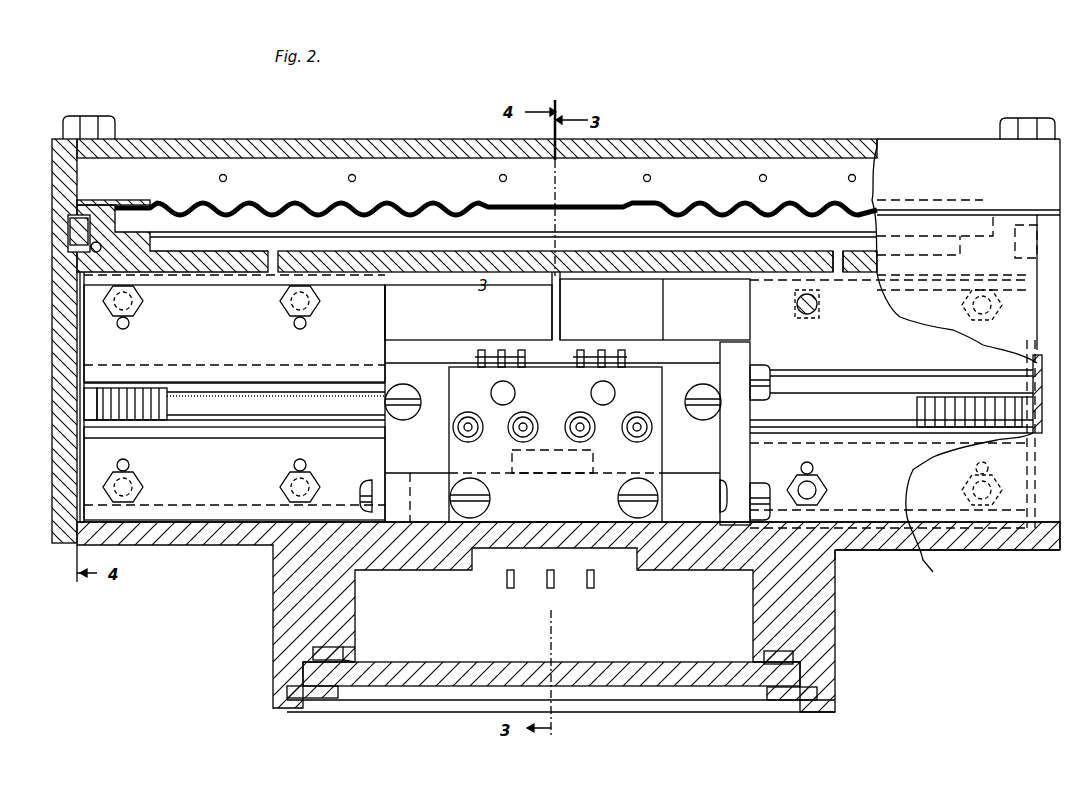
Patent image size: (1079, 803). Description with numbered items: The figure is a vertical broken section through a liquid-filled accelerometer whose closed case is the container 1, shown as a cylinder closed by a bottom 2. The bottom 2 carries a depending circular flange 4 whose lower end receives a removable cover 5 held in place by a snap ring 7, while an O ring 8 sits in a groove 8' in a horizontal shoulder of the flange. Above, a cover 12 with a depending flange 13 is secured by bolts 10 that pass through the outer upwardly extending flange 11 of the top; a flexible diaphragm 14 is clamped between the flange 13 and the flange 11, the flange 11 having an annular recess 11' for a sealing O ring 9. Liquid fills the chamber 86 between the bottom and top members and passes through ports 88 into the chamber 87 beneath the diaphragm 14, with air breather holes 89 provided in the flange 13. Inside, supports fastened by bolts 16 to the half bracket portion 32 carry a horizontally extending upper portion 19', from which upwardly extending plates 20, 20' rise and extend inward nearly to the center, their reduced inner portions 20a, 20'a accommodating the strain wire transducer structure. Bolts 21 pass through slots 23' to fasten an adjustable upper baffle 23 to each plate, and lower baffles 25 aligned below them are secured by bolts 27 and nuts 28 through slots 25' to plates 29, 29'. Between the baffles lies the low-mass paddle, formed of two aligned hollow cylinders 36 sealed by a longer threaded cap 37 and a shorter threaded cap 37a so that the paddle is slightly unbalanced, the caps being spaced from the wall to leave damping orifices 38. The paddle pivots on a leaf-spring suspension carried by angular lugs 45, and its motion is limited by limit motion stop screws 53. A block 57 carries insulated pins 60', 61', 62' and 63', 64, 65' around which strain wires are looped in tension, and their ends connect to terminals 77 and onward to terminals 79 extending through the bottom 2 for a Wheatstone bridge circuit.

The container 1 is at (77, 307).
The bottom 2 is at (176, 545).
The depending circular flange 4 is at (273, 605).
The removable cover 5 is at (378, 686).
The snap ring 7 is at (312, 698).
The O ring 8 is at (524, 671).
The groove 8' is at (362, 636).
The O ring 9 is at (68, 237).
The bolts 10 is at (115, 127).
The outer upwardly extending flange 11 is at (113, 192).
The annular recess 11' is at (54, 256).
The cover 12 is at (384, 140).
The depending flange 13 is at (52, 172).
The flexible diaphragm 14 is at (154, 200).
The bolts 16 is at (772, 366).
The horizontally extending upper portion 19' is at (759, 428).
The upwardly extending plate 20 is at (442, 268).
The upwardly extending plate 20' is at (963, 370).
The inner portion 20a is at (468, 306).
The inner portion 20'a is at (655, 306).
The bolts 21 is at (143, 301).
The baffle 23 is at (520, 404).
The slots 23' is at (457, 322).
The lower baffles 25 is at (558, 481).
The slots 25' is at (552, 463).
The bolts 27 is at (143, 483).
The nuts 28 is at (140, 497).
The plate 29 is at (197, 473).
The plate 29' is at (860, 567).
The half bracket portion 32 is at (552, 442).
The hollow cylinders 36 is at (257, 384).
The threaded cap 37 is at (1007, 427).
The threaded cap 37a is at (97, 399).
The orifices 38 is at (84, 416).
The lugs 45 is at (426, 472).
The limit motion stop screws 53 is at (408, 392).
The block 57 is at (562, 372).
The pin 60' is at (476, 354).
The pin 61' is at (491, 342).
The pin 62' is at (526, 342).
The pin 63' is at (597, 342).
The pin 64 is at (602, 349).
The pin 65' is at (644, 354).
The terminals 77 is at (508, 427).
The terminals 79 is at (506, 580).
The chamber 86 is at (669, 309).
The chamber 87 is at (513, 231).
The ports 88 is at (834, 251).
The air breather holes 89 is at (227, 178).